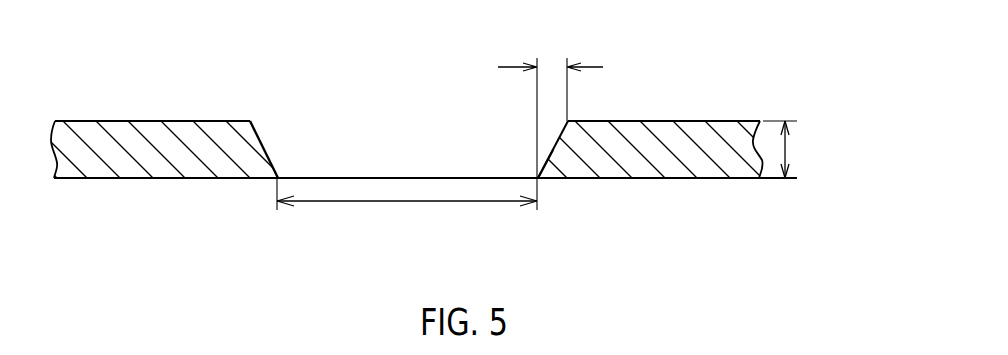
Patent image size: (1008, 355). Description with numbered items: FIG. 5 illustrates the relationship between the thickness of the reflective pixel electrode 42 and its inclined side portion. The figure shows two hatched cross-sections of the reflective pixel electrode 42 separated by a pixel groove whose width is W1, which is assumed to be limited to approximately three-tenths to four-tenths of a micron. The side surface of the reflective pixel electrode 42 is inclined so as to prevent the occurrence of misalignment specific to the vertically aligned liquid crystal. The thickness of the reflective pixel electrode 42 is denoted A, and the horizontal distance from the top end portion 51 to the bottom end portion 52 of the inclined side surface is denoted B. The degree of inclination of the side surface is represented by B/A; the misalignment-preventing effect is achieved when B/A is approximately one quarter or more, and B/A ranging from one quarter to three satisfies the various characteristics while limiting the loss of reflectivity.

The reflective pixel electrode 42 is at (700, 135).
The top end portion 51 is at (568, 120).
The bottom end portion 52 is at (538, 179).
The width of the pixel groove W1 is at (407, 210).
The thickness of the reflective pixel electrode A is at (790, 148).
The horizontal distance from top end portion to bottom end portion B is at (550, 121).